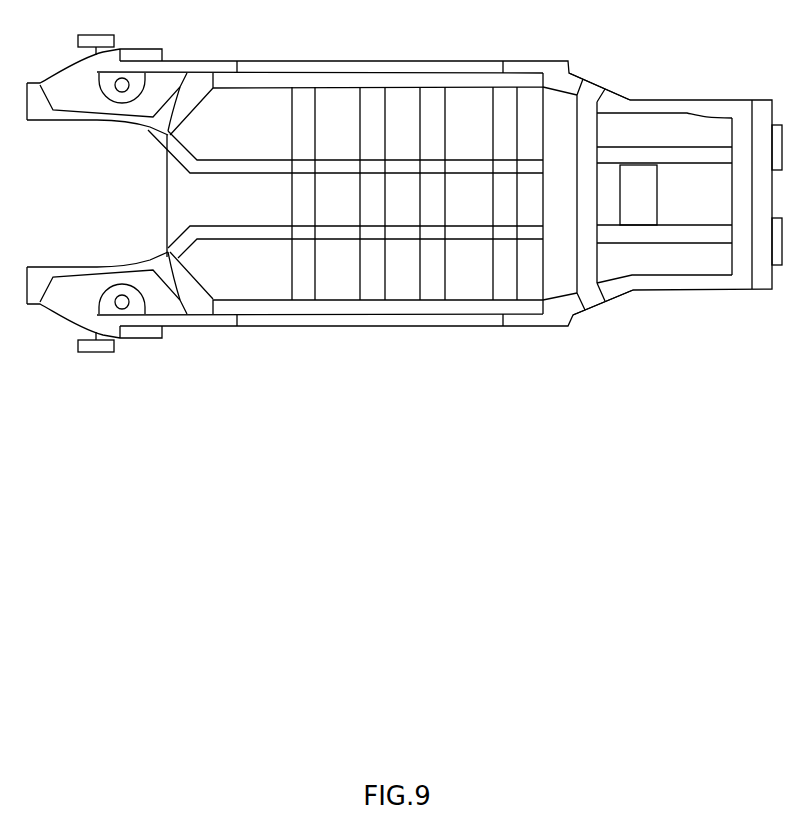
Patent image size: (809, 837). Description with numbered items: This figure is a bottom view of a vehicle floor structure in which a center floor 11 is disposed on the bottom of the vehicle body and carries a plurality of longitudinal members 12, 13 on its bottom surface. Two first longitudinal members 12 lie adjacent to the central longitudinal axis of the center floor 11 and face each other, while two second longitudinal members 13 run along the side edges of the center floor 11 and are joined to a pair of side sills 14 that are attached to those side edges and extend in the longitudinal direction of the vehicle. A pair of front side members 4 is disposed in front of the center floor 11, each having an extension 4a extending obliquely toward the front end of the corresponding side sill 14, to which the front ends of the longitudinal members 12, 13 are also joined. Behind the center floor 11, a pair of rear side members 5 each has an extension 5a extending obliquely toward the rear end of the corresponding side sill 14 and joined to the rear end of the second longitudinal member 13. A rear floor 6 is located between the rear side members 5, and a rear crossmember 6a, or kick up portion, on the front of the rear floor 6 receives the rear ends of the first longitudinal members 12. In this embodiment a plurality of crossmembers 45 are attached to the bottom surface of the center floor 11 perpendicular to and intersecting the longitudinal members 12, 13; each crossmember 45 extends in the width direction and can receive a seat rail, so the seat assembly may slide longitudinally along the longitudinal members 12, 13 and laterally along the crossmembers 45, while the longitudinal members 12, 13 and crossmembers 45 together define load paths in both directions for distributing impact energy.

The front side member 4 is at (97, 122).
The extension 4a is at (190, 88).
The rear side member 5 is at (705, 107).
The extension 5a is at (560, 73).
The rear floor 6 is at (705, 252).
The rear crossmember 6a is at (567, 130).
The center floor 11 is at (272, 121).
The first longitudinal member 12 is at (257, 165).
The second longitudinal member 13 is at (253, 80).
The side sill 14 is at (297, 63).
The crossmember 45 is at (292, 207).